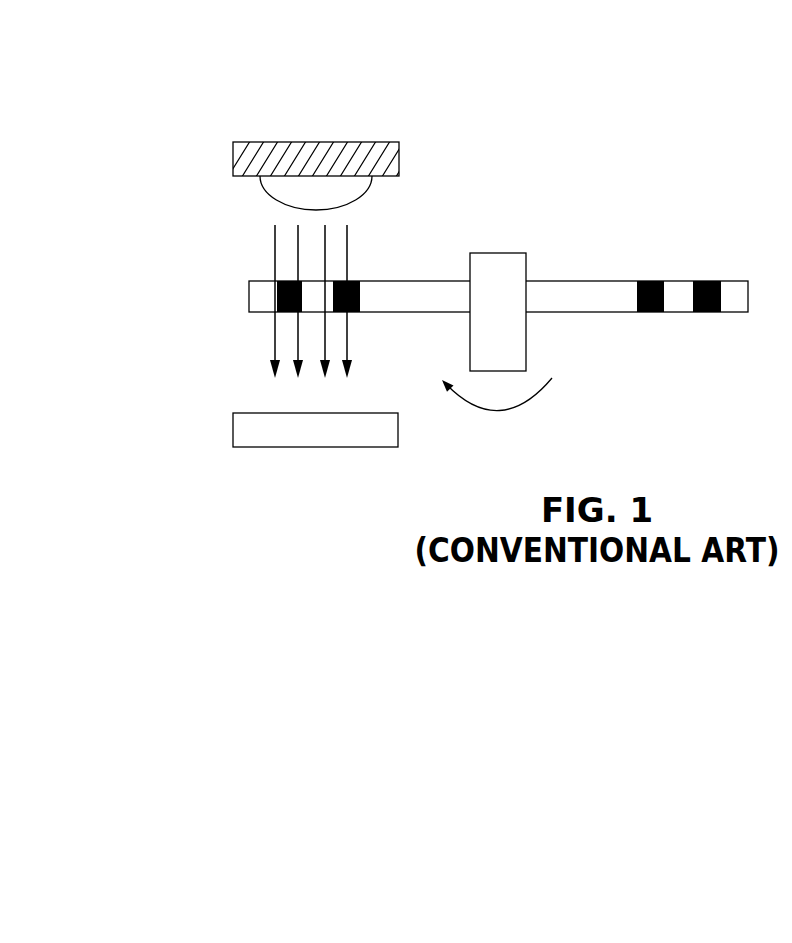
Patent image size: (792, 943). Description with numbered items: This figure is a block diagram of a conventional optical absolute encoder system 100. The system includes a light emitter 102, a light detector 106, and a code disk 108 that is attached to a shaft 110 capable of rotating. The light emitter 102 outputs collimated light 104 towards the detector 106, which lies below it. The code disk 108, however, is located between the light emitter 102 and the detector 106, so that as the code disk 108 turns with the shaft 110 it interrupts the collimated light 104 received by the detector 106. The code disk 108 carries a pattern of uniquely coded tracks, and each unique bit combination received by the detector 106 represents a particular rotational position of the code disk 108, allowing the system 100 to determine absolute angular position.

The optical absolute encoder system 100 is at (600, 87).
The light emitter 102 is at (302, 193).
The collimated light 104 is at (272, 243).
The light detector 106 is at (298, 447).
The code disk 108 is at (418, 281).
The shaft 110 is at (500, 253).